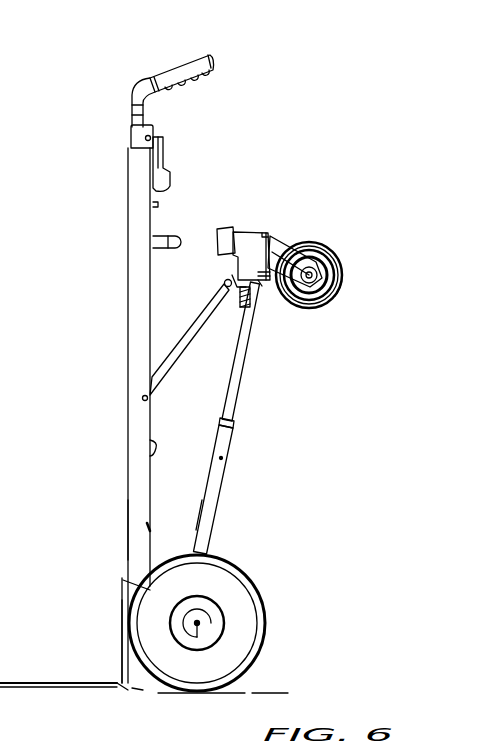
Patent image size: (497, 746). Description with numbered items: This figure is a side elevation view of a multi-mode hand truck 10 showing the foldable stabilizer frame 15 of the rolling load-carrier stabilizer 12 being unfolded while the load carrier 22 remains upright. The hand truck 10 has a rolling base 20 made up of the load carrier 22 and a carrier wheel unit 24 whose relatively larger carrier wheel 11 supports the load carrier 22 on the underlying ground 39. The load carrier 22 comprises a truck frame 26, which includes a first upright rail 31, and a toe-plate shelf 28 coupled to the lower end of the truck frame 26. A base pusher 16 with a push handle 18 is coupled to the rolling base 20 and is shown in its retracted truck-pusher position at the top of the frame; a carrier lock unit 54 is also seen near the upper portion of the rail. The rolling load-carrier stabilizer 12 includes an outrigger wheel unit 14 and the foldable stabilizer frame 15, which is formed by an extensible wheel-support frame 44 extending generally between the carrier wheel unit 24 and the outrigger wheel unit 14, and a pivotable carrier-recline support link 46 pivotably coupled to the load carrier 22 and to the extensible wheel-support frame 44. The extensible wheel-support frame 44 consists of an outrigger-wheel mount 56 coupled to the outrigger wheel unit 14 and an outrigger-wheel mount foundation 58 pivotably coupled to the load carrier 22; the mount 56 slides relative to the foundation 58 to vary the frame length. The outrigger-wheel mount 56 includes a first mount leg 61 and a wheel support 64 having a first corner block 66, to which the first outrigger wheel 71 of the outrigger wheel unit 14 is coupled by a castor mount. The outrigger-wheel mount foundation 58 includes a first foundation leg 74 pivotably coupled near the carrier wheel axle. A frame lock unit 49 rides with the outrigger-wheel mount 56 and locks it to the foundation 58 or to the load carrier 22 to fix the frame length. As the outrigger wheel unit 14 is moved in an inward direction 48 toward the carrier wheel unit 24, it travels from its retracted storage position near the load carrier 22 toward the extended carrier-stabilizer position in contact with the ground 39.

The multi-mode hand truck 10 is at (187, 357).
The carrier wheel 11 is at (238, 632).
The rolling load-carrier stabilizer 12 is at (293, 360).
The outrigger wheel unit 14 is at (347, 251).
The foldable stabilizer frame 15 is at (206, 277).
The base pusher 16 is at (128, 98).
The push handle 18 is at (160, 71).
The rolling base 20 is at (146, 695).
The load carrier 22 is at (106, 630).
The carrier wheel unit 24 is at (238, 614).
The truck frame 26 is at (121, 473).
The toe-plate shelf 28 is at (20, 684).
The first upright rail 31 is at (134, 538).
The ground 39 is at (258, 693).
The extensible wheel-support frame 44 is at (263, 418).
The pivotable carrier-recline support link 46 is at (175, 335).
The inward direction 48 is at (290, 437).
The frame lock unit 49 is at (237, 315).
The carrier lock unit 54 is at (170, 163).
The outrigger-wheel mount 56 is at (258, 331).
The outrigger-wheel mount foundation 58 is at (217, 541).
The first mount leg 61 is at (235, 387).
The wheel support 64 is at (287, 222).
The first corner block 66 is at (249, 233).
The first outrigger wheel 71 is at (346, 285).
The first foundation leg 74 is at (207, 520).